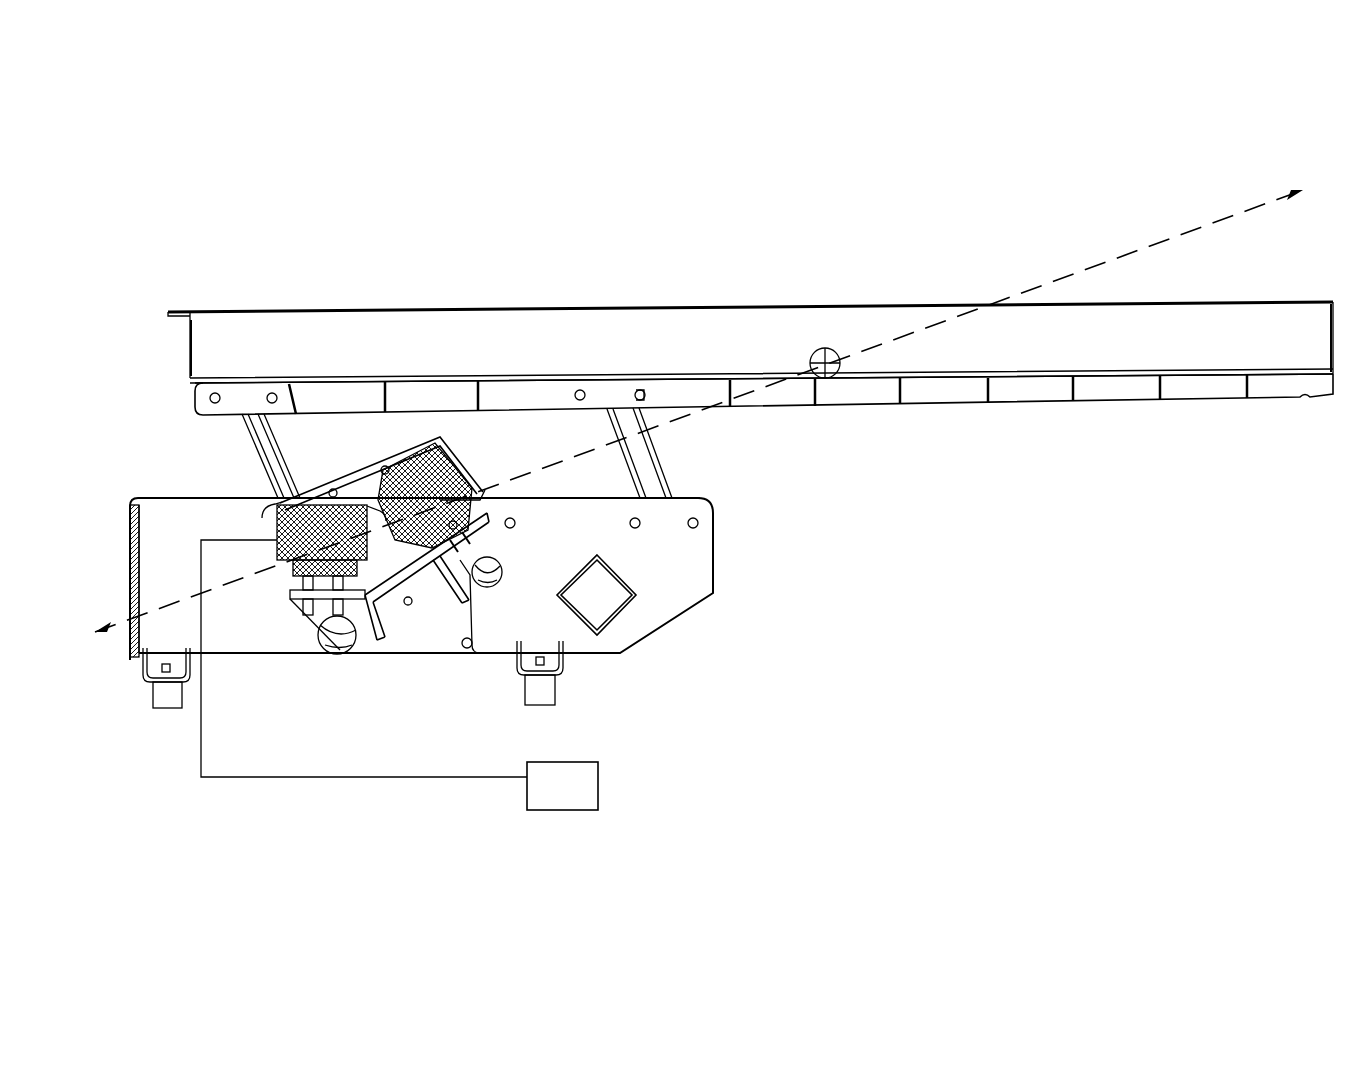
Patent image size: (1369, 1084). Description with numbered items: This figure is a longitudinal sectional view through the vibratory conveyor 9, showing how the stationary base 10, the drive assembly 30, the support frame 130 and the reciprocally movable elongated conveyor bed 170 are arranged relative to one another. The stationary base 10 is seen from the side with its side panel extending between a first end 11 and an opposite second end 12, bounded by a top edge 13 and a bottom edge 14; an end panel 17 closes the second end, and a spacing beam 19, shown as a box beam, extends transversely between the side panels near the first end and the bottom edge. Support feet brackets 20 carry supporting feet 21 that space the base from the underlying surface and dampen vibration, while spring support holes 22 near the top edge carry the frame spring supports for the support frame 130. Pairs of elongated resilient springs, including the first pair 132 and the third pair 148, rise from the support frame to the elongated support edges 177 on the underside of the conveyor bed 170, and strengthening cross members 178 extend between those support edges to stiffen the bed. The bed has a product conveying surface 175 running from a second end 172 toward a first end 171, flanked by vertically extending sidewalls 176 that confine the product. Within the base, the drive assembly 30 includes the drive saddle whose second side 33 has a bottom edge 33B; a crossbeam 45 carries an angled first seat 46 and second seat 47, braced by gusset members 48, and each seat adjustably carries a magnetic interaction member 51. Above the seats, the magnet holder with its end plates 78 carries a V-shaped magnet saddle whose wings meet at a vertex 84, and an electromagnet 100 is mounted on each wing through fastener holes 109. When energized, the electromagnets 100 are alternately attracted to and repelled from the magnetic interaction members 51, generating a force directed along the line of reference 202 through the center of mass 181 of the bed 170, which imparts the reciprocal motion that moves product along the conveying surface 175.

The vibratory conveyor 9 is at (628, 228).
The stationary base 10 is at (725, 572).
The first end 11 is at (715, 553).
The second end 12 is at (133, 548).
The top edge 13 is at (200, 497).
The bottom edge 14 is at (245, 655).
The end panel 17 is at (142, 555).
The spacing beam 19 is at (625, 590).
The support feet brackets 20 is at (143, 665).
The supporting feet 21 is at (167, 712).
The spring support holes 22 is at (700, 520).
The drive assembly 30 is at (487, 478).
The second side 33 is at (470, 628).
The bottom edge 33B is at (428, 657).
The crossbeam 45 is at (388, 612).
The first seat 46 is at (480, 507).
The second seat 47 is at (300, 620).
The gusset members 48 is at (490, 545).
The magnetic interaction member 51 is at (300, 565).
The end plates 78 is at (268, 510).
The vertex 84 is at (355, 500).
The electromagnet 100 is at (468, 448).
The fastener holes 109 is at (548, 800).
The support frame 130 is at (672, 457).
The first pair of elongated resilient springs 132 is at (660, 416).
The third pair of elongated resilient springs 148 is at (284, 447).
The reciprocally movable elongated conveyor bed 170 is at (767, 277).
The first end 171 is at (1335, 320).
The second end 172 is at (188, 330).
The product conveying surface 175 is at (1030, 370).
The vertically extending sidewalls 176 is at (890, 320).
The elongated support edges 177 is at (945, 400).
The strengthening cross members 178 is at (1073, 395).
The center of mass 181 is at (830, 349).
The line of reference 202 is at (1195, 228).